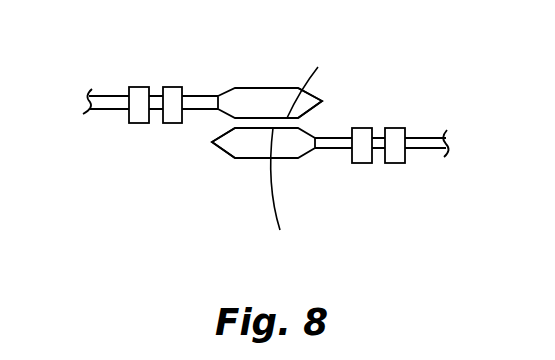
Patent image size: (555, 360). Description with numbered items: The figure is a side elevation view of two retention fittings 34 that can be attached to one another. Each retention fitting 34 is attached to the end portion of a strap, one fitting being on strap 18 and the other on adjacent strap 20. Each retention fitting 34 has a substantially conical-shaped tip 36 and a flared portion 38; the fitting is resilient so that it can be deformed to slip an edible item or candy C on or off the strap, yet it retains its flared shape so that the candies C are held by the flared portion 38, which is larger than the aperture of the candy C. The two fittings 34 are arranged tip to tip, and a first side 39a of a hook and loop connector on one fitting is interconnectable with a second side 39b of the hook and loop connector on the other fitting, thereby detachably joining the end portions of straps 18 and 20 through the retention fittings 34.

The strap 18 is at (100, 112).
The strap 20 is at (442, 152).
The edible item or candy C is at (138, 87).
The retention fitting 34 is at (279, 86).
The conical-shaped tip 36 is at (323, 99).
The flared portion 38 is at (248, 87).
The first side of hook and loop connector 39a is at (327, 88).
The second side of hook and loop connector 39b is at (290, 195).